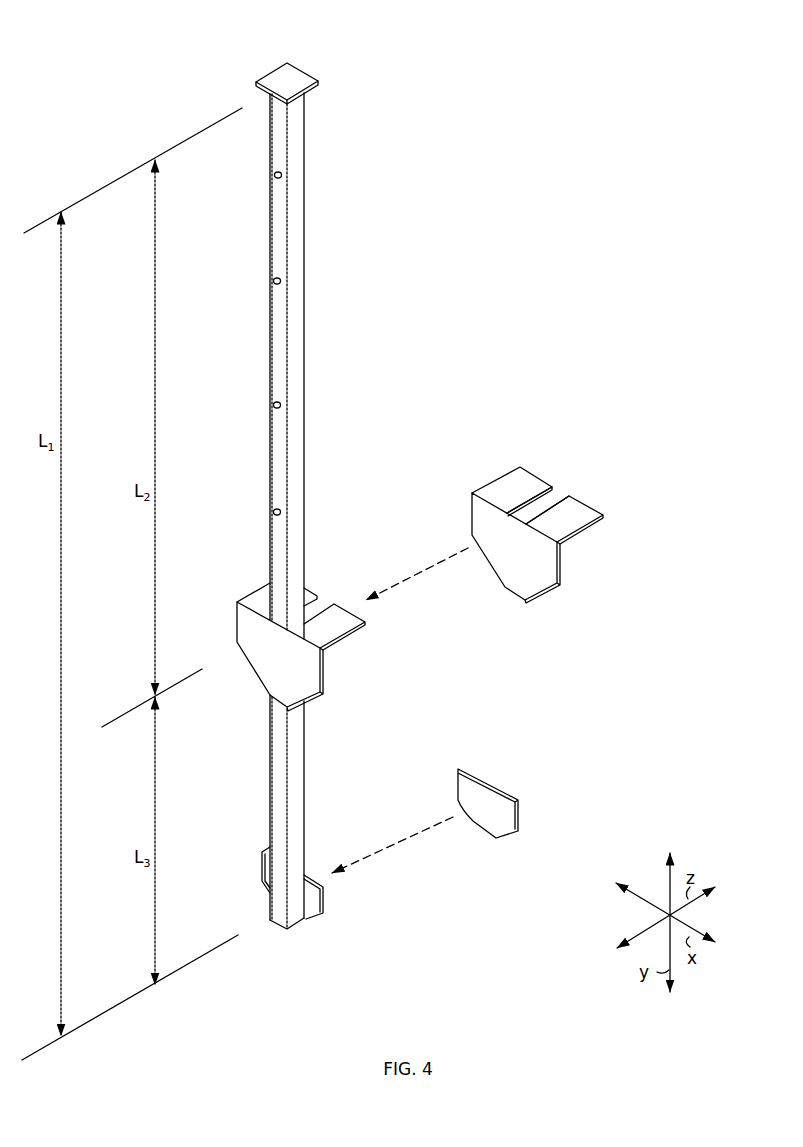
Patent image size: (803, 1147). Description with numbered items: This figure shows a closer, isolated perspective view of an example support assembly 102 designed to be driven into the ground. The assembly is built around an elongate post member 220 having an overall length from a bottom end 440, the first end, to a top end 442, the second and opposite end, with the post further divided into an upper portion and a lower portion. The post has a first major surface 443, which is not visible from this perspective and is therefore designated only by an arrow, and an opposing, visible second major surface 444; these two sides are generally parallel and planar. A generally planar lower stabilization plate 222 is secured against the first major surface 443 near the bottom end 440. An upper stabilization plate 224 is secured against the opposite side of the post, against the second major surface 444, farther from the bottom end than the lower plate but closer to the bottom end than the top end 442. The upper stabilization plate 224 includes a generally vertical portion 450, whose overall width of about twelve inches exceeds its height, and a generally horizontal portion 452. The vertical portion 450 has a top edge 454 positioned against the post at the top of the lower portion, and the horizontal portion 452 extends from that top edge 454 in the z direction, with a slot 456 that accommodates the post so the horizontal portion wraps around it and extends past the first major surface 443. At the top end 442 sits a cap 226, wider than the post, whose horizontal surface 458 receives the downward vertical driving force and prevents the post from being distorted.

The support assembly 102 is at (512, 152).
The elongate post member 220 is at (295, 228).
The lower stabilization plate 222 is at (468, 768).
The upper stabilization plate 224 is at (236, 618).
The cap 226 is at (252, 85).
The bottom end 440 is at (298, 928).
The top end 442 is at (320, 82).
The first major surface 443 is at (310, 786).
The second major surface 444 is at (275, 800).
The vertical portion 450 is at (405, 562).
The horizontal portion 452 is at (352, 623).
The top edge 454 is at (325, 652).
The slot 456 is at (555, 500).
The horizontal surface 458 is at (275, 75).